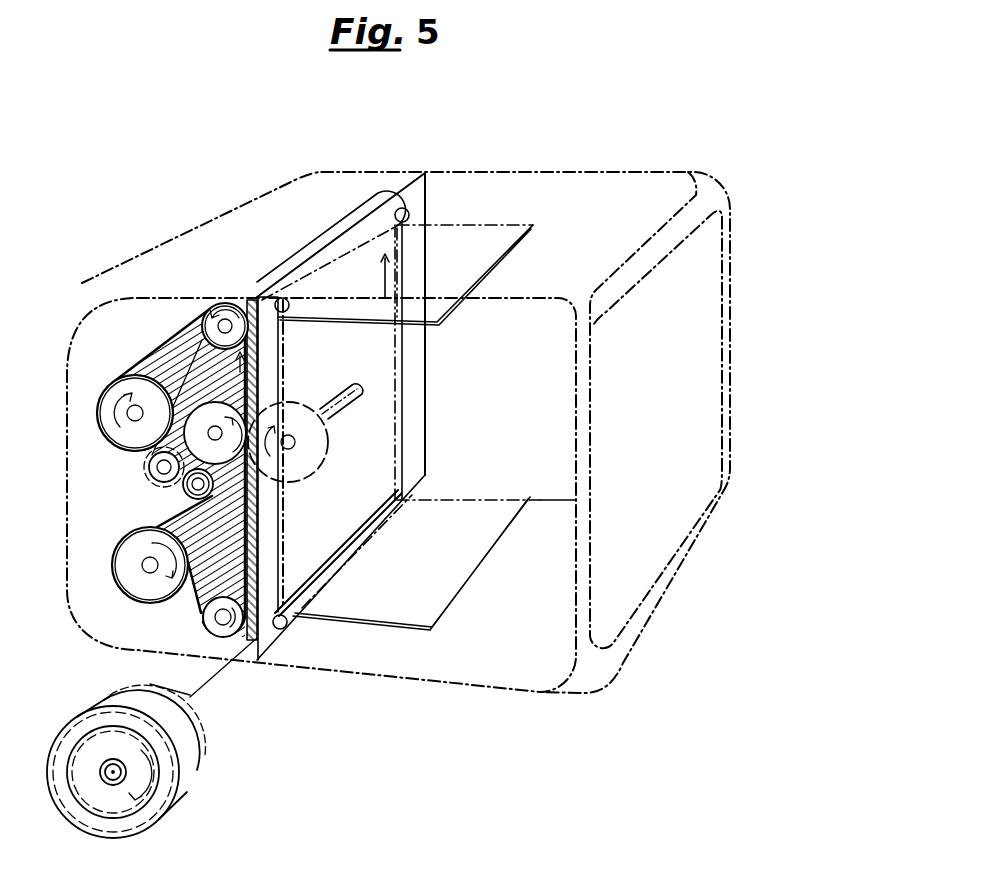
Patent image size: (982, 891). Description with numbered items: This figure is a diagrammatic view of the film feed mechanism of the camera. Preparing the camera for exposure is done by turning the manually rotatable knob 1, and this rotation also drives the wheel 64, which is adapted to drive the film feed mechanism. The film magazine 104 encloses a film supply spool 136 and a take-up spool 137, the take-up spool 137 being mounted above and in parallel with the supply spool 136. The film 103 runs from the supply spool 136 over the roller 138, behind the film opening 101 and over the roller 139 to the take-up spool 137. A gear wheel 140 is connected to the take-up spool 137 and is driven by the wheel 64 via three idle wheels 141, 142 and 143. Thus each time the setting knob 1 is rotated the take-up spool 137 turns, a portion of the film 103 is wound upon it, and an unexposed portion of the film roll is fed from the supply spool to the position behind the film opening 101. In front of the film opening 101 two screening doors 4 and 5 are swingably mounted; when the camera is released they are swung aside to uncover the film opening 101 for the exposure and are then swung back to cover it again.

The manually rotatable knob 1 is at (92, 785).
The screening door 4 is at (481, 233).
The screening door 5 is at (452, 575).
The wheel 64 is at (312, 440).
The film opening 101 is at (280, 513).
The film 103 is at (193, 600).
The film magazine 104 is at (87, 505).
The film supply spool 136 is at (128, 575).
The take-up spool 137 is at (123, 433).
The roller 138 is at (222, 627).
The roller 139 is at (208, 310).
The gear wheel 140 is at (97, 415).
The idle wheel 141 is at (222, 415).
The idle wheel 142 is at (187, 487).
The idle wheel 143 is at (147, 468).